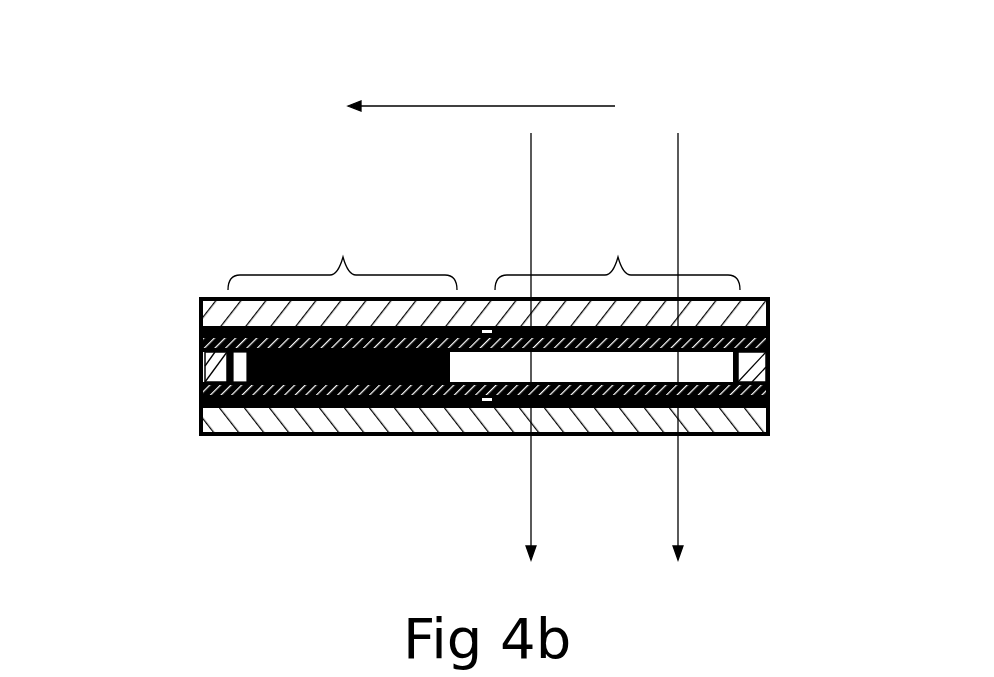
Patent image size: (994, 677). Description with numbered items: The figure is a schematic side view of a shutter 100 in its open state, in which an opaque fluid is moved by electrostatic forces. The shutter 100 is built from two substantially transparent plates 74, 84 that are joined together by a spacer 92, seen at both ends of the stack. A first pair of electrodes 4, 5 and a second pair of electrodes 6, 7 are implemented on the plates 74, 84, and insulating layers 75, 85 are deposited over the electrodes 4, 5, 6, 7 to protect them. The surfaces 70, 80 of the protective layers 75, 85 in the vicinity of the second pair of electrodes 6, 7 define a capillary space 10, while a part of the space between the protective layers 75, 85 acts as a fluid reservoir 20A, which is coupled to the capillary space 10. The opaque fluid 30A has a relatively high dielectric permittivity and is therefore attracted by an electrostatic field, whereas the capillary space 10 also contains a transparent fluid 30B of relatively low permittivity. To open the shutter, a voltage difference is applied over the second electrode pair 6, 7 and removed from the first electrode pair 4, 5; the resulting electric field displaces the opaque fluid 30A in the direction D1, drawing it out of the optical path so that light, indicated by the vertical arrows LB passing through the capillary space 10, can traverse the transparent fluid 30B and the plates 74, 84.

The shutter 100 is at (176, 229).
The substantially transparent plate 74 is at (770, 300).
The substantially transparent plate 84 is at (770, 425).
The insulating layer 75 is at (199, 341).
The insulating layer 85 is at (199, 390).
The spacer 92 is at (199, 370).
The fluid reservoir 20A is at (342, 257).
The capillary space 10 is at (617, 257).
The first electrode 4 is at (401, 325).
The first electrode 5 is at (397, 408).
The second electrode 6 is at (558, 324).
The second electrode 7 is at (550, 408).
The surface of protective layer 70 is at (702, 324).
The surface of protective layer 80 is at (700, 408).
The opaque fluid 30A is at (268, 435).
The transparent fluid 30B is at (609, 370).
The light beam LB is at (623, 346).
The direction D1 is at (481, 89).